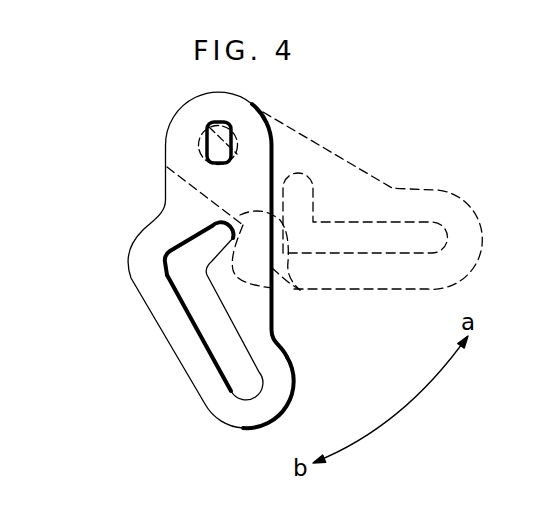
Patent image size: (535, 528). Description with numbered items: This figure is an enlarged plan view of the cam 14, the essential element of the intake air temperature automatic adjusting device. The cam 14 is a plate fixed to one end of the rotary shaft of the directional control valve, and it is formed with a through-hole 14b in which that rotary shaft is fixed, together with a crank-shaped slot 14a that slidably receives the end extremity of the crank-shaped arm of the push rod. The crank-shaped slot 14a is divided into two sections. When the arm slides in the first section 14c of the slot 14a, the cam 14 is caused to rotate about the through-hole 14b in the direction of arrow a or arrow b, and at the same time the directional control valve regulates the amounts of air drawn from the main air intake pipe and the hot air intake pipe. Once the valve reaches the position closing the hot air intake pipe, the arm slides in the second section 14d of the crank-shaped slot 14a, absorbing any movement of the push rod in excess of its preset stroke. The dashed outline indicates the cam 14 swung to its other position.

The cam 14 is at (271, 288).
The crank-shaped slot 14a is at (161, 315).
The through-hole 14b is at (233, 128).
The first section 14c is at (165, 261).
The second section 14d is at (222, 386).